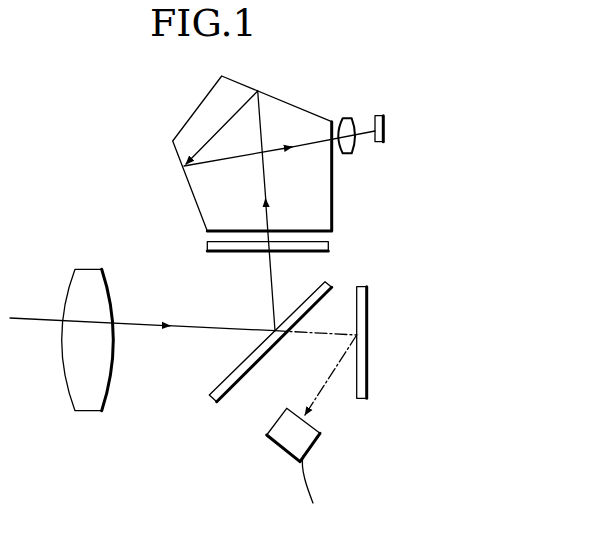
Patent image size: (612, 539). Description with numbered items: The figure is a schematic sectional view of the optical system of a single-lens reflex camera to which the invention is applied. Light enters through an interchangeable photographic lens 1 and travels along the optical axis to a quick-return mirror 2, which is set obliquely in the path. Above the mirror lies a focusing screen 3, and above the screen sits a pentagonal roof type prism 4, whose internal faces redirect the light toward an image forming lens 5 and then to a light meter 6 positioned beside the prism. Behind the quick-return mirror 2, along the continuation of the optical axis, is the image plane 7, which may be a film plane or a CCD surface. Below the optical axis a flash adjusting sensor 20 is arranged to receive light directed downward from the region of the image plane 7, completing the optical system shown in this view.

The interchangeable photographic lens 1 is at (107, 377).
The quick-return mirror 2 is at (225, 381).
The focusing screen 3 is at (328, 247).
The pentagonal roof type prism 4 is at (288, 108).
The image forming lens 5 is at (344, 118).
The light meter 6 is at (380, 116).
The image plane 7 is at (367, 302).
The flash adjusting sensor 20 is at (317, 443).